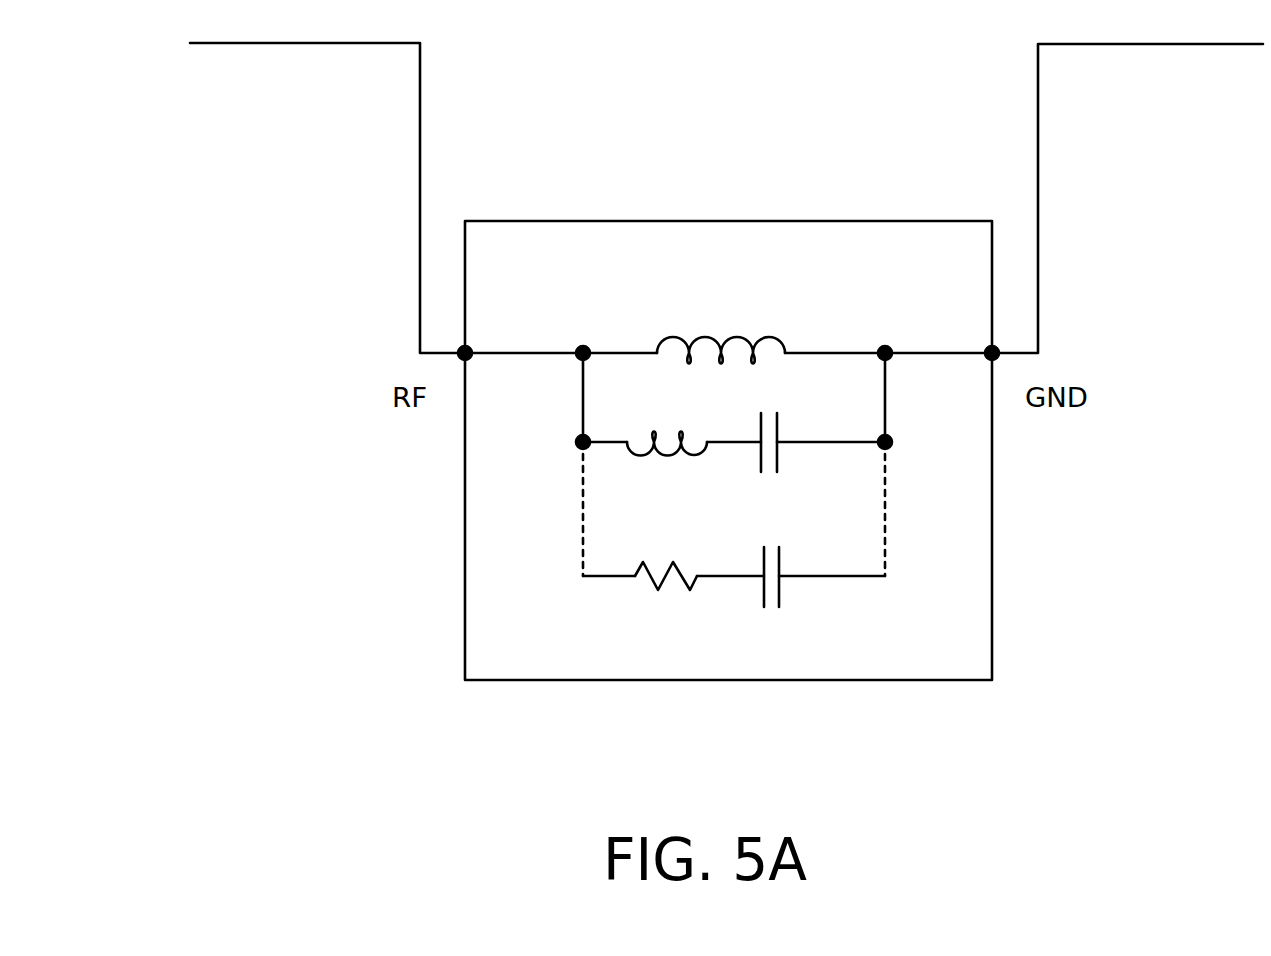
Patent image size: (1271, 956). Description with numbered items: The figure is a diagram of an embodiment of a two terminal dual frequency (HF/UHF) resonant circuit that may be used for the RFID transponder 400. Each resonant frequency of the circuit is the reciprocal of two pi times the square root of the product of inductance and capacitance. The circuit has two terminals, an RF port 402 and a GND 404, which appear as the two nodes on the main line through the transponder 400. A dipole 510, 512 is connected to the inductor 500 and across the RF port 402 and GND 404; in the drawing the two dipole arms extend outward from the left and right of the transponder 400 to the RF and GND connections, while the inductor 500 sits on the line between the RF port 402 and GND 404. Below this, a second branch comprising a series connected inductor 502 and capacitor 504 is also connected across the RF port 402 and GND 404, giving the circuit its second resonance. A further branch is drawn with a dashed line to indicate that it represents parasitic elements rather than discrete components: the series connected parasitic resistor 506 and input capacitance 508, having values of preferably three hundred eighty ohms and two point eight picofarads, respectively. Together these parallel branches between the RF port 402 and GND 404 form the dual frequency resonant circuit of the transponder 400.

The RFID transponder 400 is at (992, 608).
The RF port 402 is at (563, 353).
The GND 404 is at (898, 353).
The inductor 500 is at (700, 337).
The inductor 502 is at (665, 457).
The capacitor 504 is at (778, 452).
The parasitic resistor 506 is at (650, 585).
The input capacitance 508 is at (780, 593).
The dipole 510 is at (420, 85).
The dipole 512 is at (1038, 108).